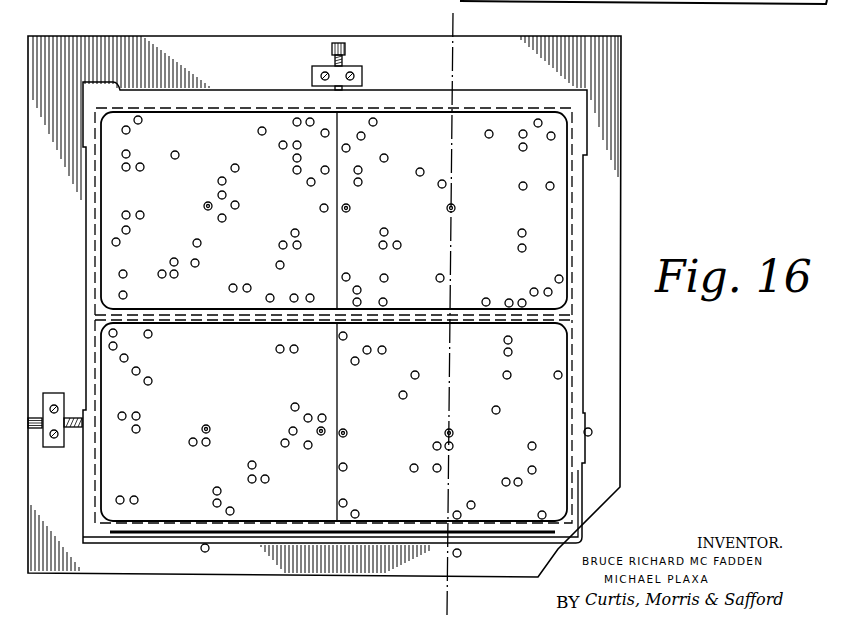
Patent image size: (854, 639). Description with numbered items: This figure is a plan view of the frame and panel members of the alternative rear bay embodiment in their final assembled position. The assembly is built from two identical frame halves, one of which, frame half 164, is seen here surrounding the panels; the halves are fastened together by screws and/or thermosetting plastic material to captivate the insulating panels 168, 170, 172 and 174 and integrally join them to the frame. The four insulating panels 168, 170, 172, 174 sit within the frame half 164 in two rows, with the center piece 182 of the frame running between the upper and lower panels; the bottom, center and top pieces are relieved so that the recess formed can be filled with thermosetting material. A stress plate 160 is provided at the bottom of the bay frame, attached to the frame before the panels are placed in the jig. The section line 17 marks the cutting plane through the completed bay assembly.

The stress plate 160 is at (130, 538).
The frame half 164 is at (418, 101).
The insulating panel 168 is at (166, 203).
The insulating panel 170 is at (242, 409).
The insulating panel 172 is at (393, 433).
The insulating panel 174 is at (483, 236).
The center piece 182 is at (397, 323).
The section line 17- 17 is at (453, 13).